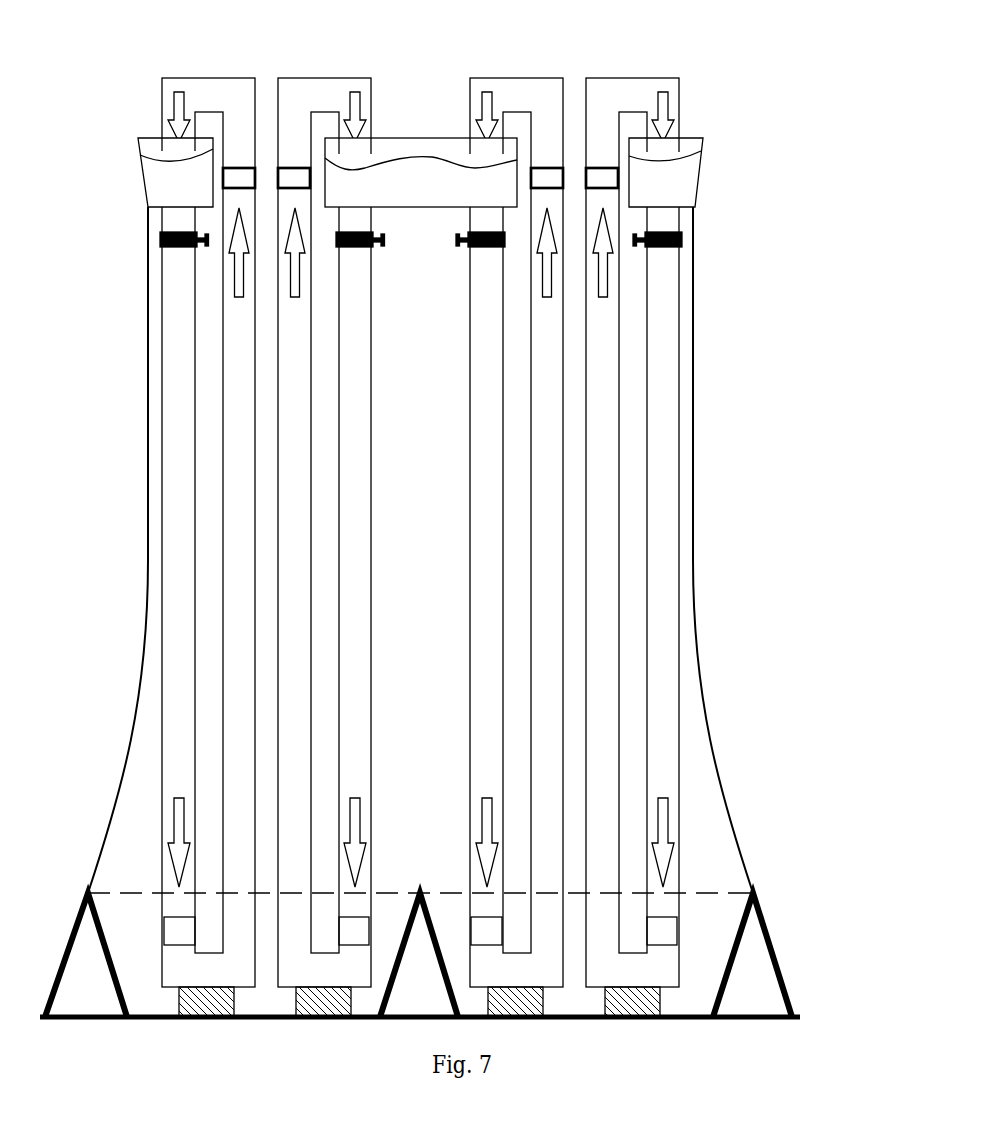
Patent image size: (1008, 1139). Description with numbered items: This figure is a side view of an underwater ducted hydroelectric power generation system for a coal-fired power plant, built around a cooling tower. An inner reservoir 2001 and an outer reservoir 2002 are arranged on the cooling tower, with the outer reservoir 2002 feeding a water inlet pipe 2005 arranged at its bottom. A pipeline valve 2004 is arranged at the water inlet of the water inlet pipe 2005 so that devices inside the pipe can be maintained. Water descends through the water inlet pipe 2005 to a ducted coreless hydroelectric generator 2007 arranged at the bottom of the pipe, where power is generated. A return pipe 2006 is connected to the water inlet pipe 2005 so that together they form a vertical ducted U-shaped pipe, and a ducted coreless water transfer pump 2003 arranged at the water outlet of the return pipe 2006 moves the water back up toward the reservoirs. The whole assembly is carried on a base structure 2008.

The inner reservoir 2001 is at (407, 106).
The outer reservoir 2002 is at (603, 106).
The ducted coreless water transfer pump 2003 is at (715, 119).
The pipeline valve 2004 is at (739, 197).
The water inlet pipe 2005 is at (705, 532).
The return pipe 2006 is at (722, 532).
The ducted coreless hydroelectric generator 2007 is at (761, 809).
The base structure 2008 is at (799, 891).